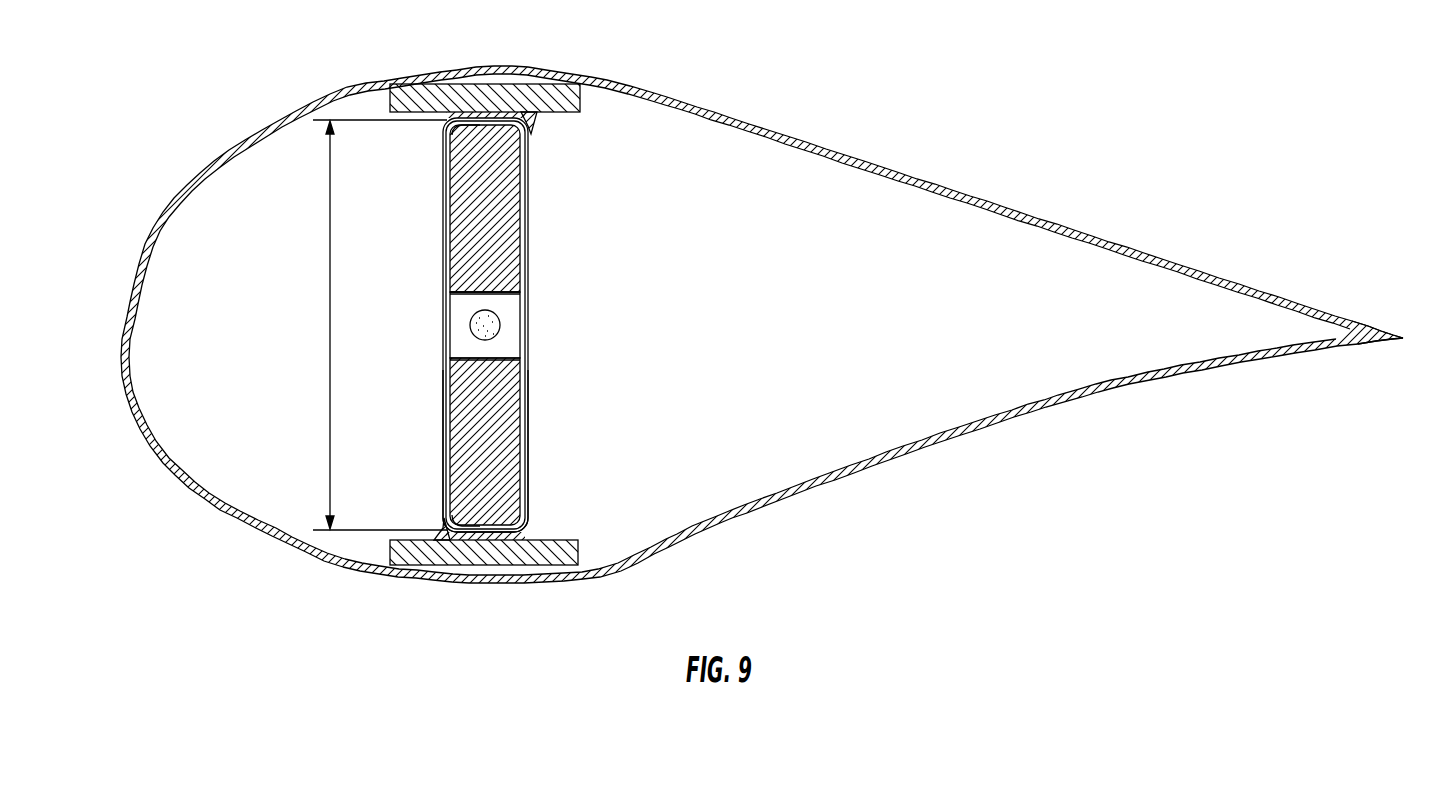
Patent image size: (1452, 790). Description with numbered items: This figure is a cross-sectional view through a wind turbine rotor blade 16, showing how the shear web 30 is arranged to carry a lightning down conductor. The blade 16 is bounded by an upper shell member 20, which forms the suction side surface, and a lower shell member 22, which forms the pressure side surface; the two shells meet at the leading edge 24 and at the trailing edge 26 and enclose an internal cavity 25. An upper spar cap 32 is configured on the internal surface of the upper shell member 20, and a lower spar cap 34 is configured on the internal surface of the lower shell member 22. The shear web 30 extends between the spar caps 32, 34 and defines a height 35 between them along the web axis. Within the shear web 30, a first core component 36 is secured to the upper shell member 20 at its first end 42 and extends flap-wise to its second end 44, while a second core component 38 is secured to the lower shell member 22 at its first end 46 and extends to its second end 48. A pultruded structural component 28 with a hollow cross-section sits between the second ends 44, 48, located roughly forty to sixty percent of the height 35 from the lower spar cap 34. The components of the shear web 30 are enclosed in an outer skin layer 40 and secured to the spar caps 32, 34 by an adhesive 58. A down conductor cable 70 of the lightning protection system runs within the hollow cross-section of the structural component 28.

The rotor blade 16 is at (1160, 140).
The upper shell member 20 is at (709, 111).
The lower shell member 22 is at (748, 516).
The leading edge 24 is at (120, 328).
The internal cavity 25 is at (873, 375).
The trailing edge 26 is at (1404, 338).
The structural component 28 is at (449, 307).
The shear web 30 is at (580, 247).
The upper spar cap 32 is at (582, 104).
The lower spar cap 34 is at (585, 546).
The height 35 is at (330, 226).
The first core component 36 is at (443, 178).
The second core component 38 is at (443, 426).
The outer skin layer 40 is at (447, 226).
The first end of the first core component 42 is at (456, 128).
The second end of the first core component 44 is at (482, 290).
The first end of the second core component 46 is at (468, 524).
The second end of the second core component 48 is at (472, 364).
The adhesive 58 is at (535, 124).
The down conductor cable 70 is at (502, 329).